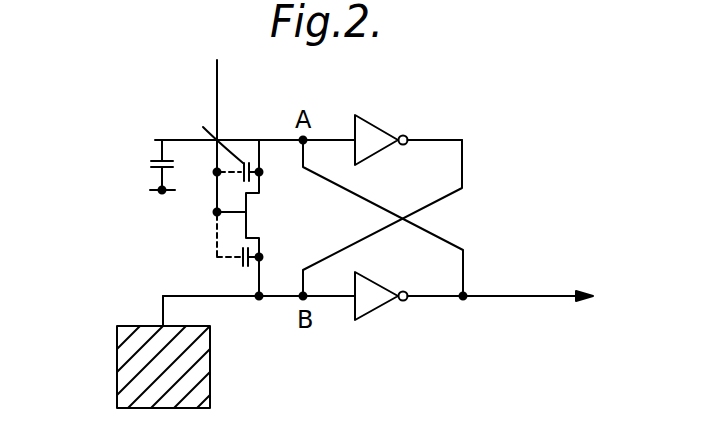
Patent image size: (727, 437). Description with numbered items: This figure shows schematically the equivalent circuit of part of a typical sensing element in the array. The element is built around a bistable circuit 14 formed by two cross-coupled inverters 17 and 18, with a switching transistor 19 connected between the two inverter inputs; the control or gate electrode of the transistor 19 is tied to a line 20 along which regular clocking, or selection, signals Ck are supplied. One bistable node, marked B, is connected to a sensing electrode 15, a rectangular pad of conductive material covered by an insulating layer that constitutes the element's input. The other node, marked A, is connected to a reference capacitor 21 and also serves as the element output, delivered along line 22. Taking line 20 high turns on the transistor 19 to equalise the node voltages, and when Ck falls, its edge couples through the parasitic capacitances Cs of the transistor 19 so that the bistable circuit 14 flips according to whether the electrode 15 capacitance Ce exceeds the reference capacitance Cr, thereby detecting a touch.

The bistable circuit 14 is at (347, 342).
The sensing electrode 15 is at (210, 398).
The inverter 17 is at (380, 128).
The inverter 18 is at (378, 315).
The switching transistor 19 is at (250, 222).
The line 20 is at (217, 100).
The reference capacitor 21 is at (158, 174).
The line 22 is at (538, 293).